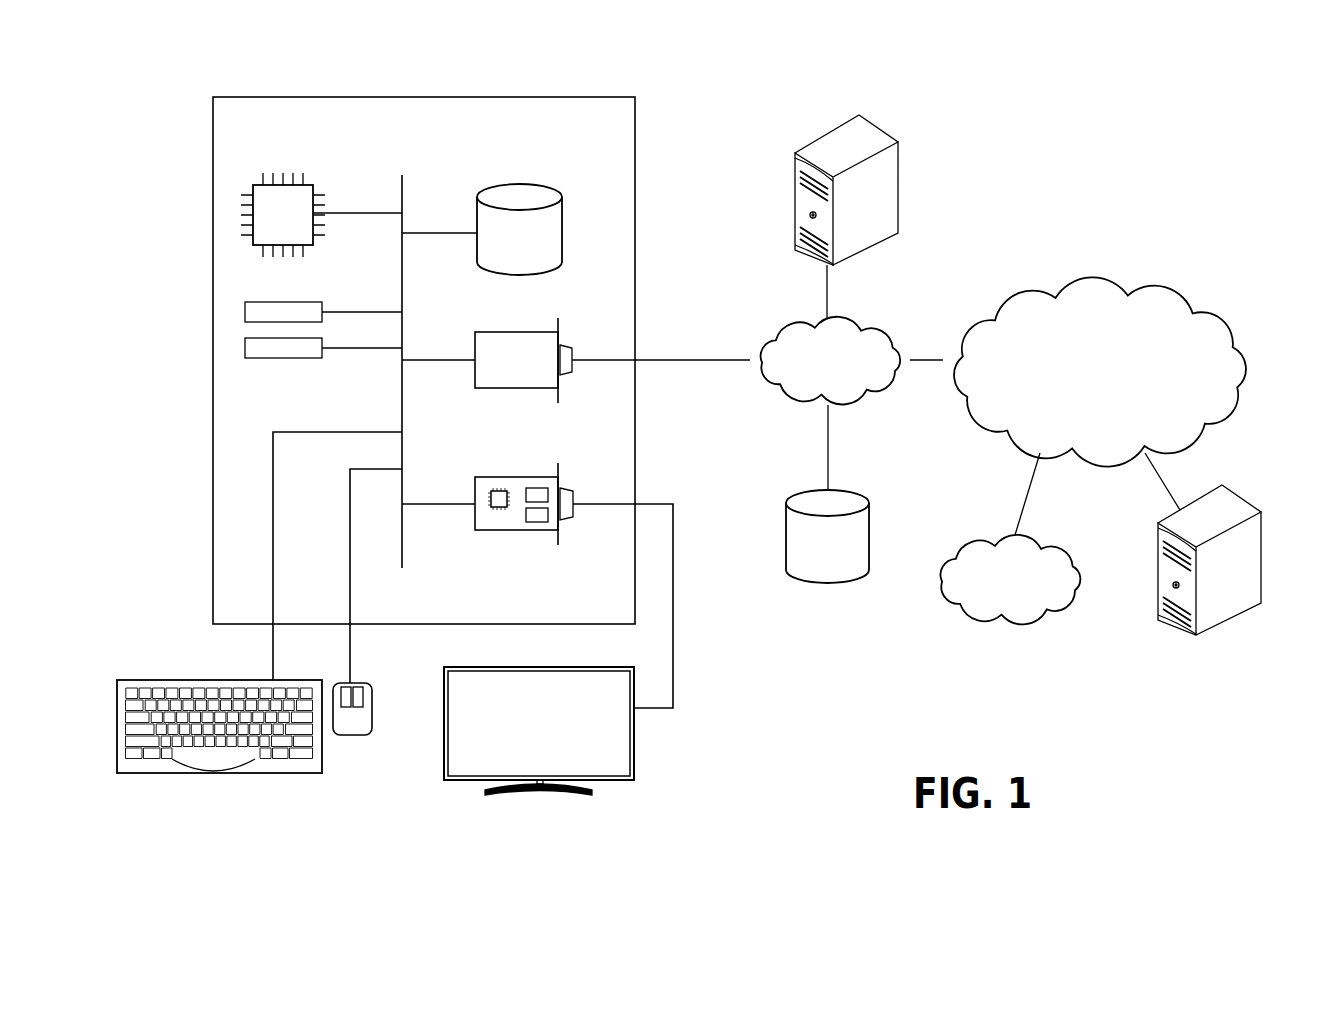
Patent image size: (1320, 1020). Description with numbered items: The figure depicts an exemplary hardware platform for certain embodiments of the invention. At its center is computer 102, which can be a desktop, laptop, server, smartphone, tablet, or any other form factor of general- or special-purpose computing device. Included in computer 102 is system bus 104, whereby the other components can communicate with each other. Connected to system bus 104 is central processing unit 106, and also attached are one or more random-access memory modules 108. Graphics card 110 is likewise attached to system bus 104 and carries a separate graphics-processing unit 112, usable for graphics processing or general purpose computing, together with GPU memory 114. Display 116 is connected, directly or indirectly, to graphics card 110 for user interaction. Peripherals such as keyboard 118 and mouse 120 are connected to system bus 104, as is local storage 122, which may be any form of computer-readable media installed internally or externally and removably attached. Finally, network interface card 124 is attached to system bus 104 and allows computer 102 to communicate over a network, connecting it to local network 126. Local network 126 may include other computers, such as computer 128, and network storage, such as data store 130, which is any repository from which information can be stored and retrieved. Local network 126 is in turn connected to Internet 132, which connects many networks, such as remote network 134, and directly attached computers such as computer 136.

The computer 102 is at (588, 97).
The system bus 104 is at (403, 183).
The central processing unit 106 is at (308, 187).
The random-access memory modules 108 is at (322, 310).
The graphics card 110 is at (515, 505).
The graphics-processing unit 112 is at (497, 510).
The GPU memory 114 is at (536, 522).
The display 116 is at (634, 760).
The keyboard 118 is at (222, 773).
The mouse 120 is at (349, 735).
The local storage 122 is at (562, 215).
The network interface card 124 is at (475, 343).
The local network 126 is at (880, 315).
The computer 128 is at (883, 128).
The data store 130 is at (859, 493).
The Internet 132 is at (1143, 282).
The remote network 134 is at (1063, 535).
The computer 136 is at (1237, 490).